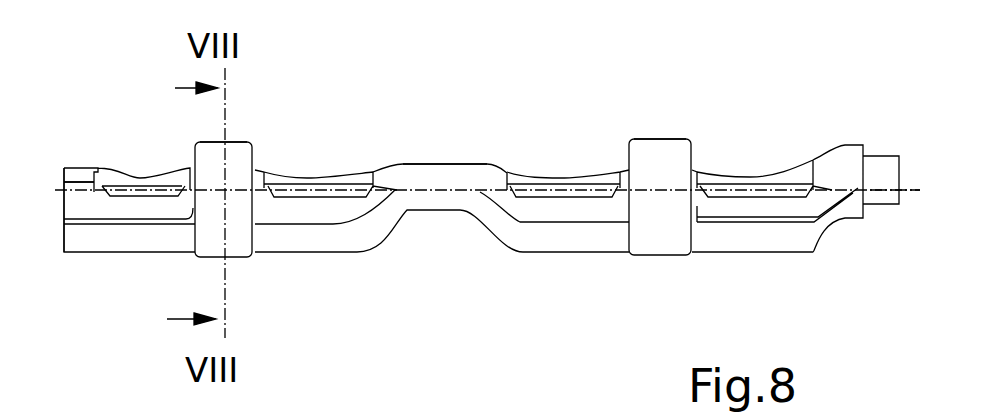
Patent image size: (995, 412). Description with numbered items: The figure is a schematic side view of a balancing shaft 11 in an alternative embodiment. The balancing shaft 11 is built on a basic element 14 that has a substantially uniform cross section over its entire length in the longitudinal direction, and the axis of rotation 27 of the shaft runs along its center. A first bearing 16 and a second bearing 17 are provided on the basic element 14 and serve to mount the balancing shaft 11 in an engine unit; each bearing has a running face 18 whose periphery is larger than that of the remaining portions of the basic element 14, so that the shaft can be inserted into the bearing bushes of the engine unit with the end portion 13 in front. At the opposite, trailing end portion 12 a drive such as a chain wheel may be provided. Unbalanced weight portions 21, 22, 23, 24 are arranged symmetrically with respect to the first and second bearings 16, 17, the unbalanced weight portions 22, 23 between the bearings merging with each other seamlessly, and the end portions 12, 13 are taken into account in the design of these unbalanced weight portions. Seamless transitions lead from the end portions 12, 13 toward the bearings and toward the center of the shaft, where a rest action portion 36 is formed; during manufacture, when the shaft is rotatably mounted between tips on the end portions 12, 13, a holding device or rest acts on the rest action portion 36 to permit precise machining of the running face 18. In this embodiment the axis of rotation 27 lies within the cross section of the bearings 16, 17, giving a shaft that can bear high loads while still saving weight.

The balancing shaft 11 is at (583, 125).
The trailing end portion 12 is at (897, 130).
The end portion 13 is at (87, 165).
The basic element 14 is at (480, 237).
The first bearing 16 is at (240, 262).
The second bearing 17 is at (663, 262).
The running face 18 is at (243, 155).
The unbalanced weight portion 21 is at (148, 260).
The unbalanced weight portion 22 is at (316, 260).
The unbalanced weight portion 23 is at (583, 258).
The unbalanced weight portion 24 is at (788, 260).
The axis of rotation 27 is at (910, 192).
The rest action portion 36 is at (447, 137).